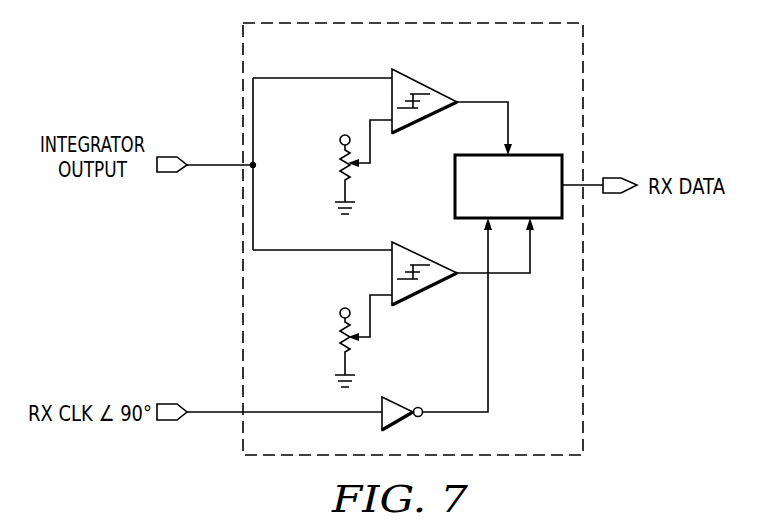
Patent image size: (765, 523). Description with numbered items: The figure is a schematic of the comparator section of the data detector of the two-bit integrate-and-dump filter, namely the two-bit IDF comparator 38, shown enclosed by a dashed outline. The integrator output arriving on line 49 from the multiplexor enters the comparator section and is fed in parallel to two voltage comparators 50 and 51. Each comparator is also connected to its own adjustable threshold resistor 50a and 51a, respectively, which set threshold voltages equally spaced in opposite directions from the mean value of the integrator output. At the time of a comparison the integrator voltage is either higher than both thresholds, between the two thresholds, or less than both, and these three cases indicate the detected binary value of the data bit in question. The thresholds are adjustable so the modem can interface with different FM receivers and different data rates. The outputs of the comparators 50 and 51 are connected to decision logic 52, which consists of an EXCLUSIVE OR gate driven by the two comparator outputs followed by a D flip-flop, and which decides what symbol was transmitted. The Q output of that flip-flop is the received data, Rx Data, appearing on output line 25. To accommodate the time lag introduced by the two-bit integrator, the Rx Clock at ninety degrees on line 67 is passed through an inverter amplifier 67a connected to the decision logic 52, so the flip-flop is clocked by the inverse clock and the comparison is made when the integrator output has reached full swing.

The two-bit IDF comparator 38 is at (583, 68).
The output line of the 2-to-1 multiplexor 49 is at (160, 157).
The voltage comparator 50 is at (445, 90).
The adjustable threshold resistor 50a is at (336, 163).
The voltage comparator 51 is at (433, 292).
The adjustable threshold resistor 51a is at (336, 337).
The decision logic 52 is at (455, 184).
The output line 25 is at (612, 178).
The Rx Clock at 90° line 67 is at (160, 404).
The inverter amplifier 67a is at (405, 405).